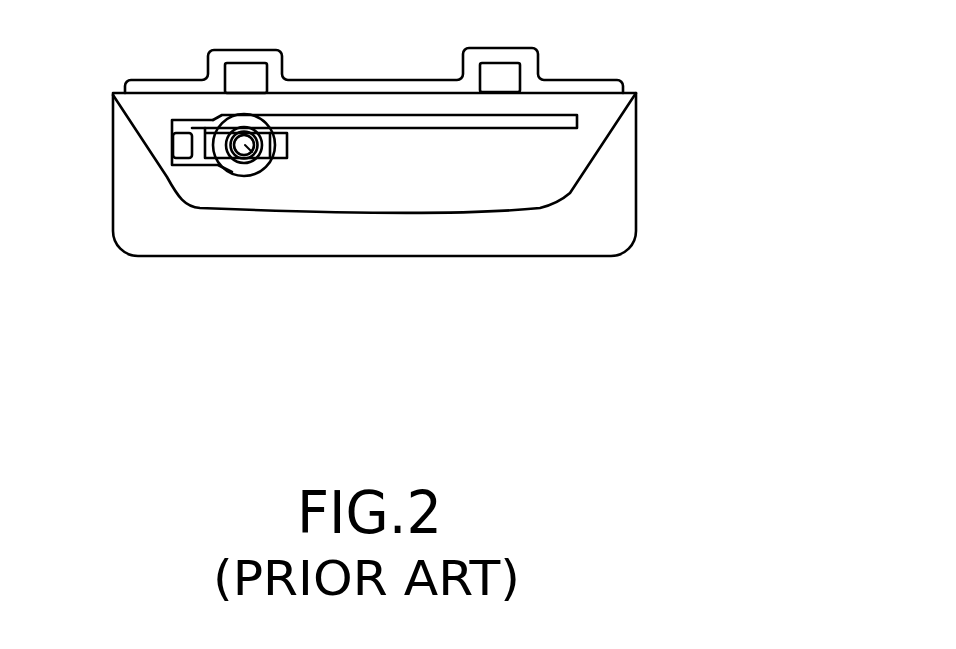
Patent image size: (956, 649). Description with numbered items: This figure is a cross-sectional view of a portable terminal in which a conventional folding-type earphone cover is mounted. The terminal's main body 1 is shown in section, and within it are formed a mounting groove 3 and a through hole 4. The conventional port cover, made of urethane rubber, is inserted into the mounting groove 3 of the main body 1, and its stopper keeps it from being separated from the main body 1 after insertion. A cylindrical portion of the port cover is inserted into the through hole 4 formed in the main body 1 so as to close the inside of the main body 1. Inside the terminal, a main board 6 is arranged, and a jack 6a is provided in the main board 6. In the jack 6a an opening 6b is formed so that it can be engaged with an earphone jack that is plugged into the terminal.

The main body 1 is at (376, 176).
The mounting groove 3 is at (162, 146).
The through hole 4 is at (204, 238).
The main board 6 is at (386, 69).
The jack 6a is at (340, 220).
The opening 6b is at (300, 243).